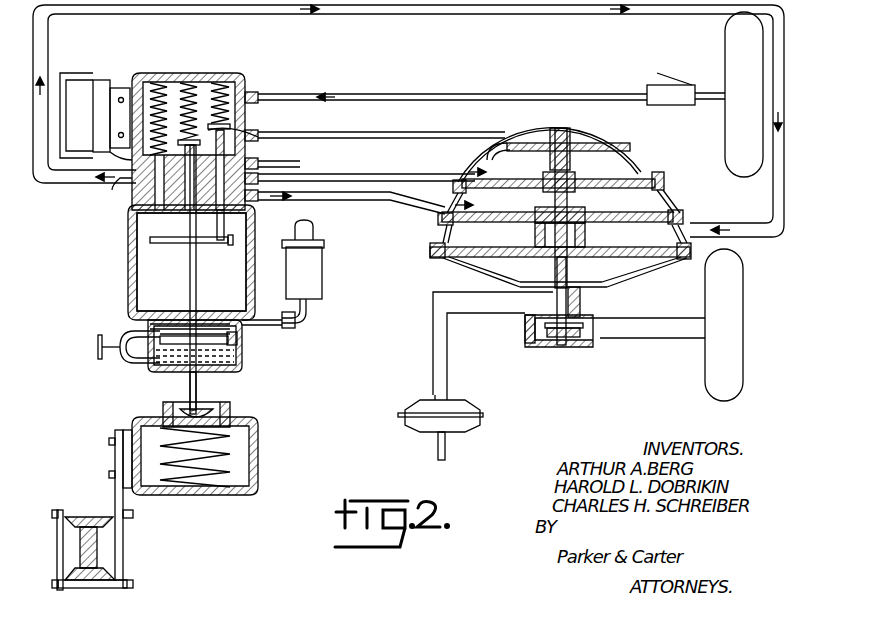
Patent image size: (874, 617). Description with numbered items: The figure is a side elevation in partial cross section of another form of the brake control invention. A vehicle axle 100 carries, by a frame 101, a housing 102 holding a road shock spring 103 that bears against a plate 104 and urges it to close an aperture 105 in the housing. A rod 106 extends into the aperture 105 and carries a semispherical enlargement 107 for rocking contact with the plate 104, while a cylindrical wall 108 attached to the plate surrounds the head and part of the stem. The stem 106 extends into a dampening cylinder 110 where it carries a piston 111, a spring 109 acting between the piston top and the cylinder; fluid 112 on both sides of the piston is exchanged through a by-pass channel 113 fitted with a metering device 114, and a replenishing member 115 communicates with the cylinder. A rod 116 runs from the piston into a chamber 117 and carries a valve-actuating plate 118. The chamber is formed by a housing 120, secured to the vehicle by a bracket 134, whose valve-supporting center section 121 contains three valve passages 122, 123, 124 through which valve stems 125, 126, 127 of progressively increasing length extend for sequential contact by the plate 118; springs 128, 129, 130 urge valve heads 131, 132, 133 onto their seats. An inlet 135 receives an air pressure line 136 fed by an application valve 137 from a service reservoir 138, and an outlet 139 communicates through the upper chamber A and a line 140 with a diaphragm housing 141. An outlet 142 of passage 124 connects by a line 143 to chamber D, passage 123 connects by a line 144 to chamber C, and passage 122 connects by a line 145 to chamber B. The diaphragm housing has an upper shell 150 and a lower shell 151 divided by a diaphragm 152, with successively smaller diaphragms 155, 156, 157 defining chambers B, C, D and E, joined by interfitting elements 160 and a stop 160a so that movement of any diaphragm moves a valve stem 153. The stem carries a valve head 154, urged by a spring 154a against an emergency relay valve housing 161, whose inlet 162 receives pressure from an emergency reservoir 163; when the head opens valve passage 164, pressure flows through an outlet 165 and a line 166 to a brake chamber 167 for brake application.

The axle 100 is at (92, 549).
The frame 101 is at (115, 496).
The housing 102 is at (203, 497).
The road shock spring 103 is at (225, 457).
The plate 104 is at (148, 426).
The aperture 105 is at (233, 421).
The rod 106 is at (190, 387).
The semispherical enlargement 107 is at (226, 410).
The cylindrical wall 108 is at (165, 411).
The spring 109 is at (150, 327).
The dampening cylinder 110 is at (200, 410).
The piston 111 is at (240, 342).
The fluid 112 is at (232, 359).
The by-pass channel 113 is at (122, 358).
The metering device 114 is at (98, 347).
The replenishing member 115 is at (320, 273).
The rod 116 is at (190, 279).
The chamber 117 is at (145, 261).
The valve-actuating plate 118 is at (210, 239).
The housing 120 is at (124, 304).
The valve-supporting center section 121 is at (170, 196).
The valve passage 122 is at (150, 194).
The valve passage 123 is at (160, 227).
The valve passage 124 is at (258, 165).
The valve stem 125 is at (160, 223).
The valve stem 126 is at (195, 241).
The valve stem 127 is at (225, 223).
The spring 128 is at (158, 79).
The spring 129 is at (197, 53).
The spring 130 is at (219, 79).
The valve head 131 is at (140, 161).
The valve head 132 is at (238, 128).
The valve head 133 is at (258, 135).
The bracket 134 is at (117, 115).
The inlet 135 is at (255, 92).
The air pressure line 136 is at (358, 94).
The application valve 137 is at (681, 100).
The air pressure service reservoir 138 is at (735, 33).
The outlet 139 is at (280, 150).
The line 140 is at (324, 141).
The diaphragm housing 141 is at (578, 127).
The outlet 142 is at (258, 196).
The line 143 is at (330, 177).
The line 144 is at (350, 197).
The line 145 is at (532, 10).
The upper shell 150 is at (650, 180).
The lower shell 151 is at (638, 277).
The diaphragm 152 is at (456, 269).
The valve stem 153 is at (568, 282).
The valve head 154 is at (586, 342).
The spring 154a is at (535, 345).
The diaphragm 155 is at (680, 202).
The diaphragm 156 is at (666, 180).
The diaphragm 157 is at (490, 161).
The interfitting elements 160 is at (560, 142).
The stop 160a is at (548, 140).
The emergency relay valve housing 161 is at (530, 334).
The inlet 162 is at (594, 342).
The emergency reservoir 163 is at (708, 373).
The valve passage 164 is at (582, 302).
The outlet 165 is at (526, 305).
The line 166 is at (433, 359).
The brake chamber 167 is at (425, 426).
The upper chamber A is at (234, 78).
The lower chamber B is at (457, 236).
The second chamber C is at (672, 204).
The third chamber D is at (624, 172).
The fourth chamber E is at (578, 128).